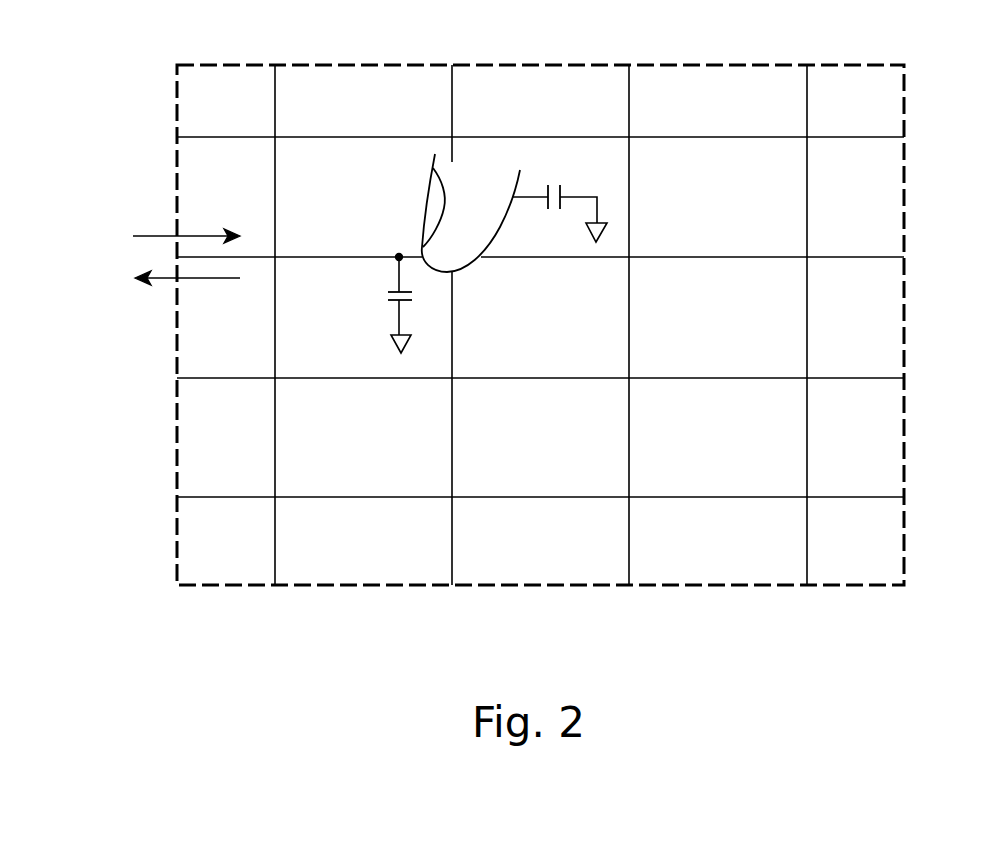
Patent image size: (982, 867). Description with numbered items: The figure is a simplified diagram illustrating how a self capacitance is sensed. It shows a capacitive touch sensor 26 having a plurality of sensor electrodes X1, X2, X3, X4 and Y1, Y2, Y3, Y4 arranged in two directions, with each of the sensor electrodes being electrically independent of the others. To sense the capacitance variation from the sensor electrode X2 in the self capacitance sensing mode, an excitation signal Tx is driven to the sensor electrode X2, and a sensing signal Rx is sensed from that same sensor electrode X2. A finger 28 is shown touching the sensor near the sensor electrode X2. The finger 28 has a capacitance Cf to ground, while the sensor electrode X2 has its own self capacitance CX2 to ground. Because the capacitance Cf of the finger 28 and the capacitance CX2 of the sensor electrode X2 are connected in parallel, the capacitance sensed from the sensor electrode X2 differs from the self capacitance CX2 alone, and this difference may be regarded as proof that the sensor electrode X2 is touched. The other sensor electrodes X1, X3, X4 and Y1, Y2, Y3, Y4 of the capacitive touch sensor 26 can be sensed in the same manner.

The capacitive touch sensor 26 is at (177, 158).
The finger 28 is at (423, 211).
The sensor electrode X1 is at (571, 132).
The sensor electrode X2 is at (571, 252).
The sensor electrode X3 is at (571, 373).
The sensor electrode X4 is at (571, 492).
The sensor electrode Y1 is at (286, 306).
The sensor electrode Y2 is at (465, 306).
The sensor electrode Y3 is at (643, 306).
The sensor electrode Y4 is at (823, 306).
The excitation signal Tx is at (167, 232).
The sensing signal Rx is at (167, 277).
The self capacitance CX2 is at (356, 304).
The finger capacitance Cf is at (560, 194).